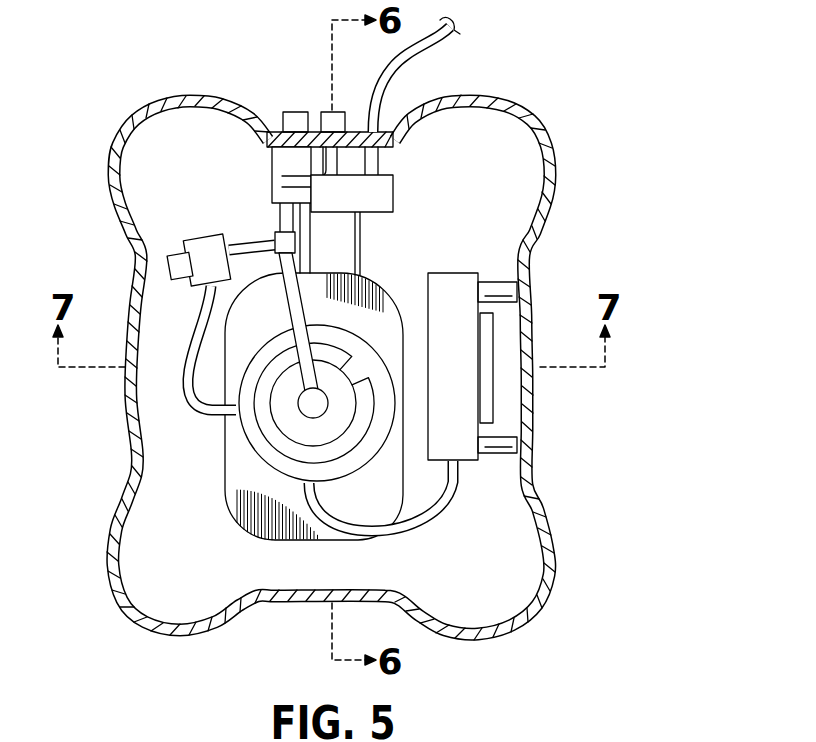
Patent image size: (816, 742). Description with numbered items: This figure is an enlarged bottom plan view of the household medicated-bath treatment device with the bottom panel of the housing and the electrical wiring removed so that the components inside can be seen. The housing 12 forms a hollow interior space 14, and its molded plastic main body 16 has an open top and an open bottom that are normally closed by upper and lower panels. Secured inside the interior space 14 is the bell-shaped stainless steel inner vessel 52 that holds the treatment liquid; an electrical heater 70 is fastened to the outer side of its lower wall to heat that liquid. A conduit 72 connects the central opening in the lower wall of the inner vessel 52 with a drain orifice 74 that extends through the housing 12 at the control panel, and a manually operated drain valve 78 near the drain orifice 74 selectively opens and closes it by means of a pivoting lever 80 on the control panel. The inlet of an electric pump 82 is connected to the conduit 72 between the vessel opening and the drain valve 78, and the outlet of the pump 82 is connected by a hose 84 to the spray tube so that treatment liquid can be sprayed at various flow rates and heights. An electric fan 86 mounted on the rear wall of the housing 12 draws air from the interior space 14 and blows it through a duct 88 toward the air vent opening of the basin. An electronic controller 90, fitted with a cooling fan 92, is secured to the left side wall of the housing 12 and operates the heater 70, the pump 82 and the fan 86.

The housing 12 is at (111, 151).
The hollow interior space 14 is at (207, 563).
The main body 16 is at (112, 191).
The inner vessel 52 is at (247, 448).
The heater 70 is at (262, 466).
The conduit 72 is at (290, 312).
The drain orifice 74 is at (327, 111).
The drain valve 78 is at (272, 174).
The pivoting lever 80 is at (296, 112).
The electric pump 82 is at (171, 252).
The hose 84 is at (186, 383).
The electric fan 86 is at (393, 190).
The duct 88 is at (362, 244).
The electronic controller 90 is at (483, 335).
The cooling fan 92 is at (492, 400).